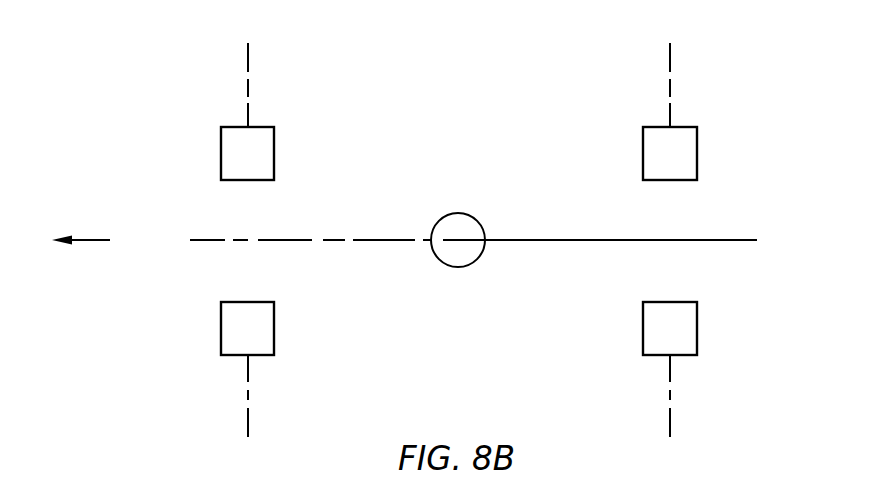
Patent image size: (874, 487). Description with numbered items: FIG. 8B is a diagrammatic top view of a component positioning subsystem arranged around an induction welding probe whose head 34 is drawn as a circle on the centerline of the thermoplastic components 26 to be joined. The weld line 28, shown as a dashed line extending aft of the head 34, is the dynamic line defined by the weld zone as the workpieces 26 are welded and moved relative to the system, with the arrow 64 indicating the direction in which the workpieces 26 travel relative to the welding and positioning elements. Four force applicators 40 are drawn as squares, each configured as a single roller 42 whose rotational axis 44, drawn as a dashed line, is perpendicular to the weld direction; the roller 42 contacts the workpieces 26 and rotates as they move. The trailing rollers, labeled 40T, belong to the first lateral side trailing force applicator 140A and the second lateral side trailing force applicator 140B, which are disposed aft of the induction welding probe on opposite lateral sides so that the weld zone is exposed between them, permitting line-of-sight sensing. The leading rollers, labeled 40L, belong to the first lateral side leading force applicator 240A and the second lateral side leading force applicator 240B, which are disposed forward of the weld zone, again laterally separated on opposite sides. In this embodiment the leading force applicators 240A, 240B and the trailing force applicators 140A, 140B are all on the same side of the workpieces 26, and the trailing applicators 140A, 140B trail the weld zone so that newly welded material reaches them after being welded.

The thermoplastic components 26 is at (703, 232).
The weld line 28 is at (283, 242).
The head 34 is at (460, 257).
The force applicator 40 is at (458, 240).
The trailing sensor 40T is at (221, 155).
The leading sensor 40L is at (697, 135).
The roller 42 is at (274, 150).
The rotational axis 44 is at (246, 53).
The arrow 64 is at (93, 242).
The first lateral side trailing force applicator 140A is at (202, 314).
The second lateral side trailing force applicator 140B is at (202, 166).
The first lateral side leading force applicator 240A is at (718, 329).
The second lateral side leading force applicator 240B is at (718, 147).